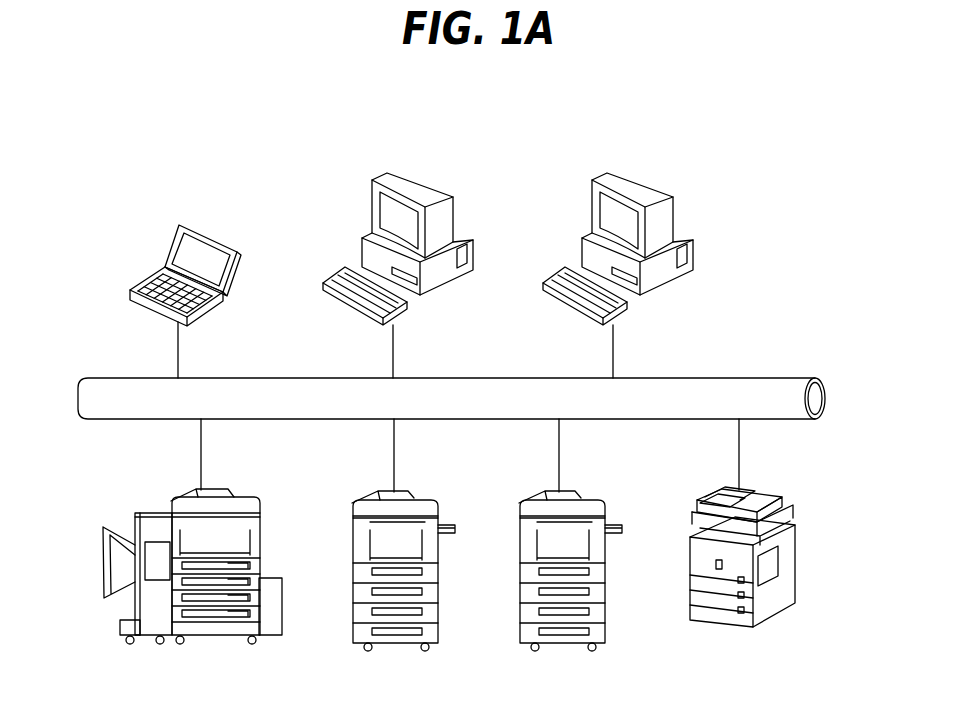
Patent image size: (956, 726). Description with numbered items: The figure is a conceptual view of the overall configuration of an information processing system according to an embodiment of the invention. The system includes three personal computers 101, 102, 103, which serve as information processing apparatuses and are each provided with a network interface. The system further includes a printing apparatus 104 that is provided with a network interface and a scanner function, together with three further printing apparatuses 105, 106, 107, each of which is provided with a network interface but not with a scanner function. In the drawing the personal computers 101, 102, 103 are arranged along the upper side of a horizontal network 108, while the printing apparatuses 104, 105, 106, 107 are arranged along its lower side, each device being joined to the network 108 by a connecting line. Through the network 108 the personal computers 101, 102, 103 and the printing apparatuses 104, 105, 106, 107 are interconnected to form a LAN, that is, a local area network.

The personal computer 101 is at (208, 238).
The personal computer 102 is at (415, 173).
The personal computer 103 is at (635, 173).
The printing apparatus 104 is at (201, 492).
The printing apparatus 105 is at (403, 492).
The printing apparatus 106 is at (567, 492).
The printing apparatus 107 is at (752, 490).
The network 108 is at (725, 378).